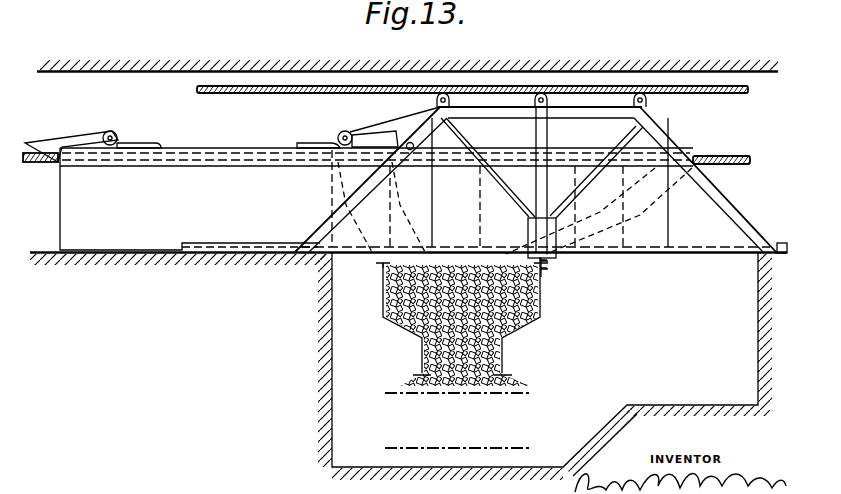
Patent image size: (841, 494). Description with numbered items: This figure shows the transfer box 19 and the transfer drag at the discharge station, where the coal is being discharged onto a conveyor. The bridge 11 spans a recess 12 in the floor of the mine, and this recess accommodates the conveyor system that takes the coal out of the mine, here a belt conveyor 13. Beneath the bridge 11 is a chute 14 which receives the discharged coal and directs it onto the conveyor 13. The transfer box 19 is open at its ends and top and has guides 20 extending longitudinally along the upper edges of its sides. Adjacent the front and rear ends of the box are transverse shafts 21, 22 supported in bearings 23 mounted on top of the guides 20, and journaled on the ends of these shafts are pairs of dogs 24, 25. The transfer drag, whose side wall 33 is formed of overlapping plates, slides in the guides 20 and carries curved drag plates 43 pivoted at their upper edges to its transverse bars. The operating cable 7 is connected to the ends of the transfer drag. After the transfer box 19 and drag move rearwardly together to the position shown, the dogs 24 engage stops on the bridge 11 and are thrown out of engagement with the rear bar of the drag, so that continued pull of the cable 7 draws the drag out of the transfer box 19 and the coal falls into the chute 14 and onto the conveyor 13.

The operating cable 7 is at (735, 95).
The bridge 11 is at (732, 201).
The recess 12 is at (545, 366).
The belt conveyor 13 is at (532, 393).
The chute 14 is at (541, 290).
The transfer box 19 is at (190, 199).
The guides 20 is at (222, 148).
The transverse shaft 21 is at (345, 132).
The transverse shaft 22 is at (112, 131).
The bearings 23 is at (124, 147).
The dogs 24 is at (389, 127).
The dogs 25 is at (66, 134).
The side wall 33 is at (668, 212).
The curved drag plates 43 is at (522, 231).